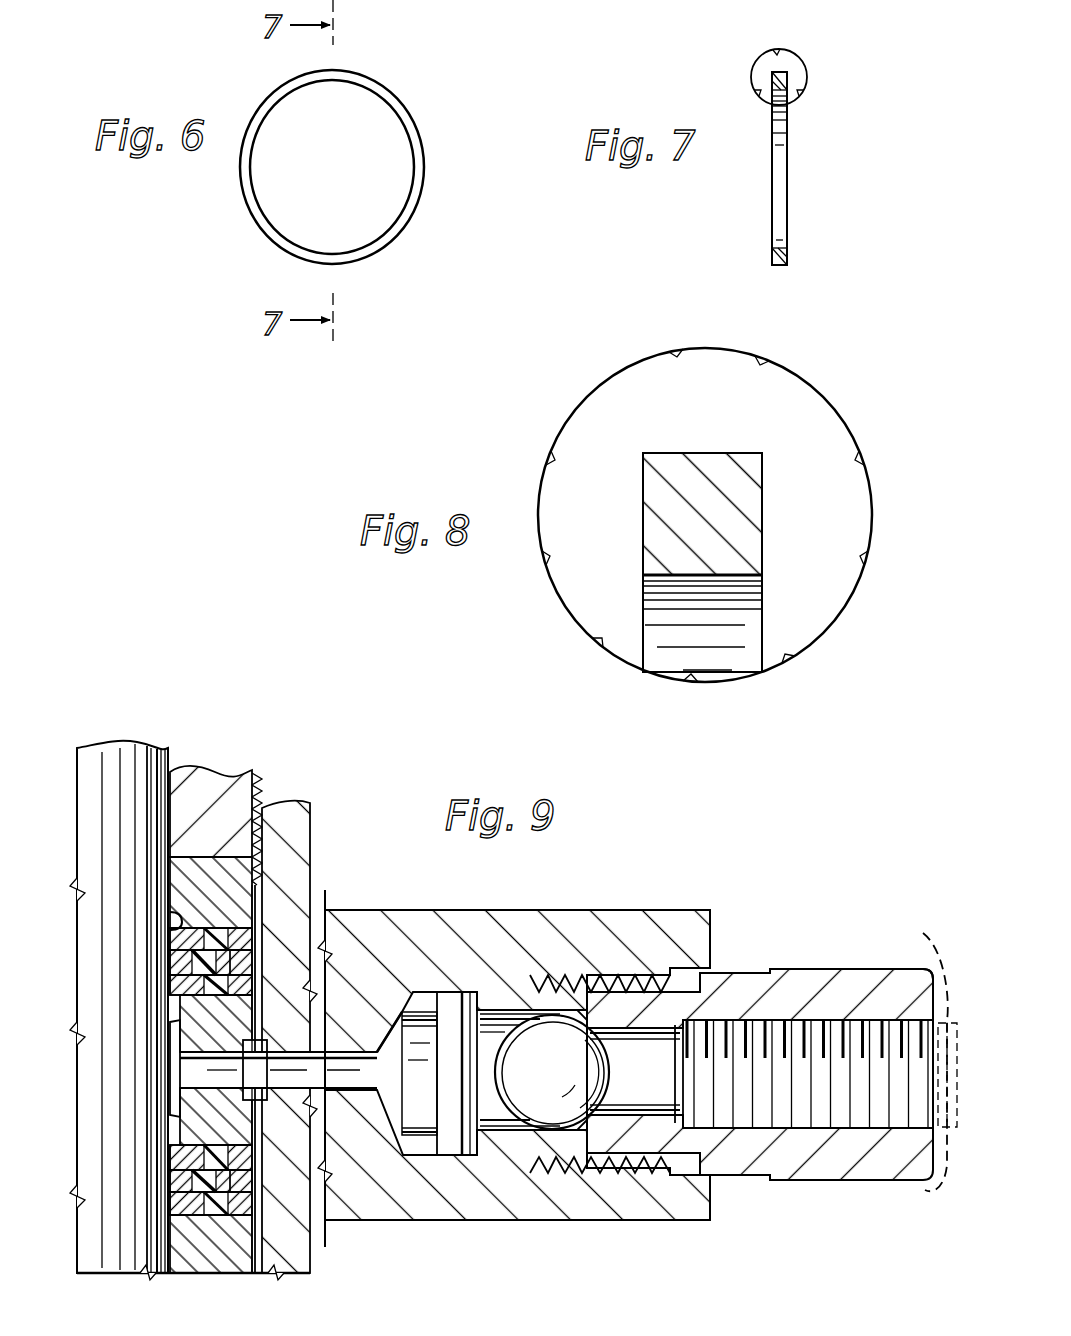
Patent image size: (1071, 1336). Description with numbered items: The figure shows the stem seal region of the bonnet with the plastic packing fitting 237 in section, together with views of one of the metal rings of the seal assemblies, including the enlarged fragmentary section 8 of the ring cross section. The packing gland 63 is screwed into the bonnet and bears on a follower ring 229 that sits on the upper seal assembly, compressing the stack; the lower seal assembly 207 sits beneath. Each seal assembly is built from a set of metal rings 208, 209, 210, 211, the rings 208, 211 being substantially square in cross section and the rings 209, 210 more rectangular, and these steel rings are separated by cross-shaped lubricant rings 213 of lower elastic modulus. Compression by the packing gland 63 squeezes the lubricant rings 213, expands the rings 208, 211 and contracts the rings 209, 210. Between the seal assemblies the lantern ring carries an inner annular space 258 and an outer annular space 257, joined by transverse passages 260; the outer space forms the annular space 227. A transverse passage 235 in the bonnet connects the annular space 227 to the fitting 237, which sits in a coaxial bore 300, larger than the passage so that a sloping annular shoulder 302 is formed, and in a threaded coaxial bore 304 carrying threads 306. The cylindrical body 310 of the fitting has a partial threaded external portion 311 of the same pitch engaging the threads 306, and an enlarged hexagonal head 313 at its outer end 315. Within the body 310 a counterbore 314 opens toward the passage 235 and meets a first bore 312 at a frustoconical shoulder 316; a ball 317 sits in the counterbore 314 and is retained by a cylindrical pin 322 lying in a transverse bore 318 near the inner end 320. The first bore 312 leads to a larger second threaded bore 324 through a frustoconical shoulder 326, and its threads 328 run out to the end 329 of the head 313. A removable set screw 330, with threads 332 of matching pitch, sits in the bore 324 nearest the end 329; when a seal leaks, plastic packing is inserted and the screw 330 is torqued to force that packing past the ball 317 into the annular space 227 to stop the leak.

In FIG. 7, the section line of FIG. 8 is at (810, 60).
In FIG. 9, the packing gland 63 is at (225, 790).
In FIG. 9, the seal assembly 207 is at (220, 1222).
In FIG. 6, the metal ring 208 is at (386, 80).
In FIG. 7, the metal ring 208 is at (768, 232).
In FIG. 8, the metal ring 208 is at (740, 686).
In FIG. 9, the metal ring 208 is at (195, 915).
In FIG. 9, the metal ring 209 is at (176, 918).
In FIG. 9, the metal ring 210 is at (205, 985).
In FIG. 9, the metal ring 211 is at (215, 1003).
In FIG. 9, the lubricant ring 213 is at (200, 962).
In FIG. 9, the annular space 227 is at (254, 1082).
In FIG. 9, the follower ring 229 is at (224, 877).
In FIG. 9, the transverse passage 235 is at (357, 1078).
In FIG. 9, the plastic packing fitting 237 is at (763, 958).
In FIG. 9, the outer annular space 257 is at (182, 1040).
In FIG. 9, the inner annular space 258 is at (176, 1100).
In FIG. 9, the transverse passages 260 is at (205, 1077).
In FIG. 9, the coaxial bore 300 is at (497, 990).
In FIG. 9, the sloping annular shoulder 302 is at (420, 990).
In FIG. 9, the threaded coaxial bore 304 is at (613, 988).
In FIG. 9, the threads 306 is at (541, 988).
In FIG. 9, the body 310 is at (725, 1217).
In FIG. 9, the partial threaded external portion 311 is at (603, 985).
In FIG. 9, the first bore 312 is at (653, 1081).
In FIG. 9, the hexagonal head 313 is at (822, 967).
In FIG. 9, the counterbore 314 is at (453, 1140).
In FIG. 9, the outer end 315 is at (813, 1190).
In FIG. 9, the frustoconical shoulder 316 is at (574, 1130).
In FIG. 9, the ball 317 is at (546, 1076).
In FIG. 9, the transverse bore 318 is at (447, 990).
In FIG. 9, the inner end 320 is at (396, 1002).
In FIG. 9, the cylindrical pin 322 is at (490, 1118).
In FIG. 9, the second threaded bore 324 is at (890, 1097).
In FIG. 9, the frustoconical shoulder 326 is at (673, 1112).
In FIG. 9, the threads 328 is at (712, 1178).
In FIG. 9, the end 329 is at (932, 1000).
In FIG. 9, the set screw 330 is at (936, 965).
In FIG. 9, the threads 332 is at (927, 1190).